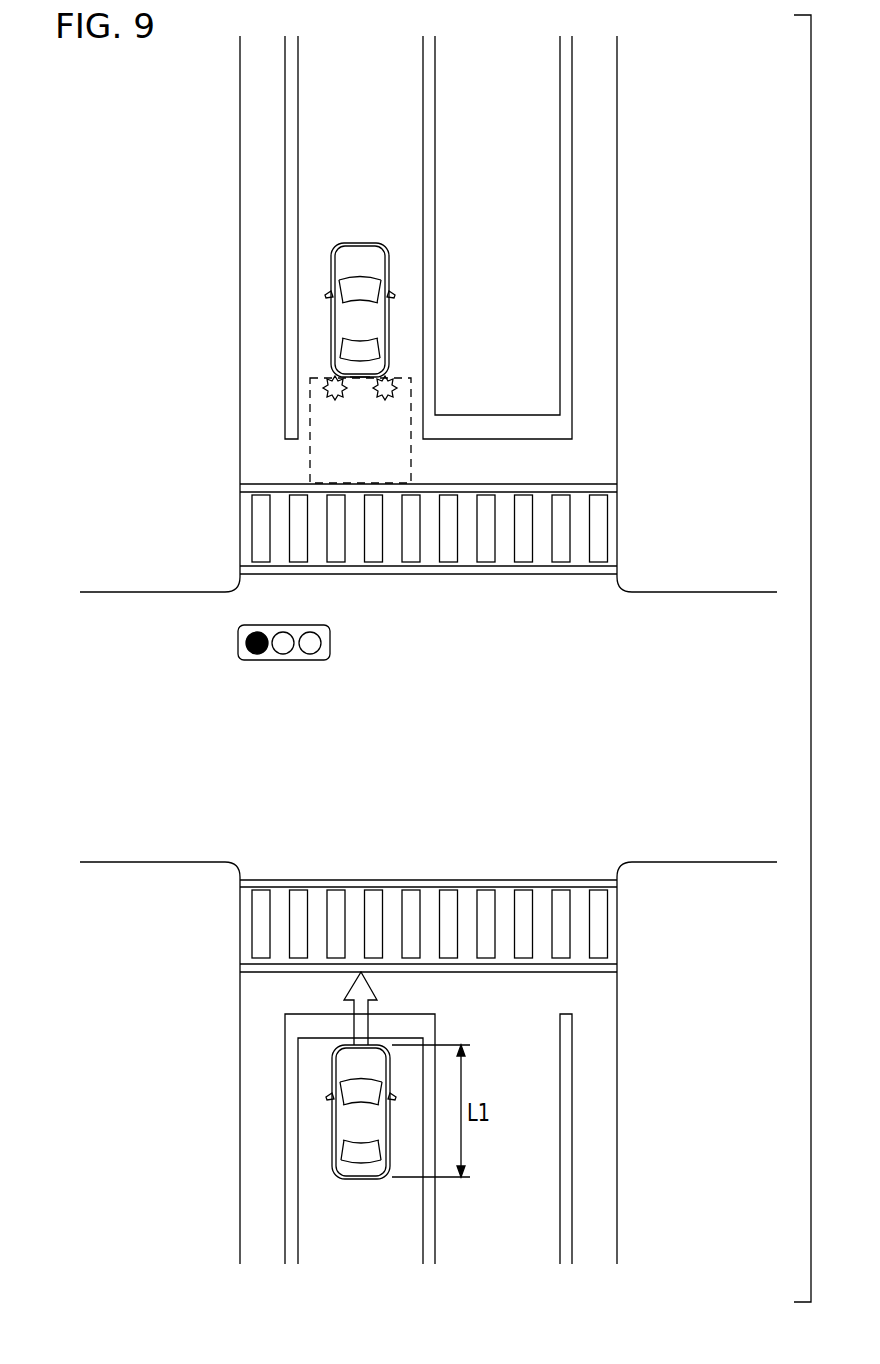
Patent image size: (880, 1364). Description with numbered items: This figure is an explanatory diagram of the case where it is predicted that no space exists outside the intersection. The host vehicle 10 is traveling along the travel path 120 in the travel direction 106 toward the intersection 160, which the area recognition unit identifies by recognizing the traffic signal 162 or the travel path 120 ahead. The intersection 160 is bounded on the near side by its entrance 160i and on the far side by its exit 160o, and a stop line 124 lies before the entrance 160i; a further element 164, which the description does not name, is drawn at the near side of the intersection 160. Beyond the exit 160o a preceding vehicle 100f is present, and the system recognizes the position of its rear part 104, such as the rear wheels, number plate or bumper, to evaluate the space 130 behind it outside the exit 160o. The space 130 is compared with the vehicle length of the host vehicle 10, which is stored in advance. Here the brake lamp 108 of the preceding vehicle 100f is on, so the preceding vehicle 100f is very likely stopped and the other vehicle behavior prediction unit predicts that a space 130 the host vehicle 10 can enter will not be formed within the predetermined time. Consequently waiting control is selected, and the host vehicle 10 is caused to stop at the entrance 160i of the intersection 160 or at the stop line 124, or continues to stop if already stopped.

The host vehicle 10 is at (359, 1179).
The preceding vehicle 100f is at (390, 273).
The rear part of the preceding vehicle 104 is at (359, 380).
The travel direction 106 is at (343, 995).
The brake lamp 108 is at (337, 376).
The travel path 120 is at (383, 1238).
The stop line 124 is at (418, 1027).
The space 130 is at (392, 405).
The intersection 160 is at (218, 526).
The exit of the intersection 160o is at (377, 483).
The entrance of the intersection 160i is at (388, 972).
The traffic signal 162 is at (238, 643).
The crosswalk 164 is at (250, 930).